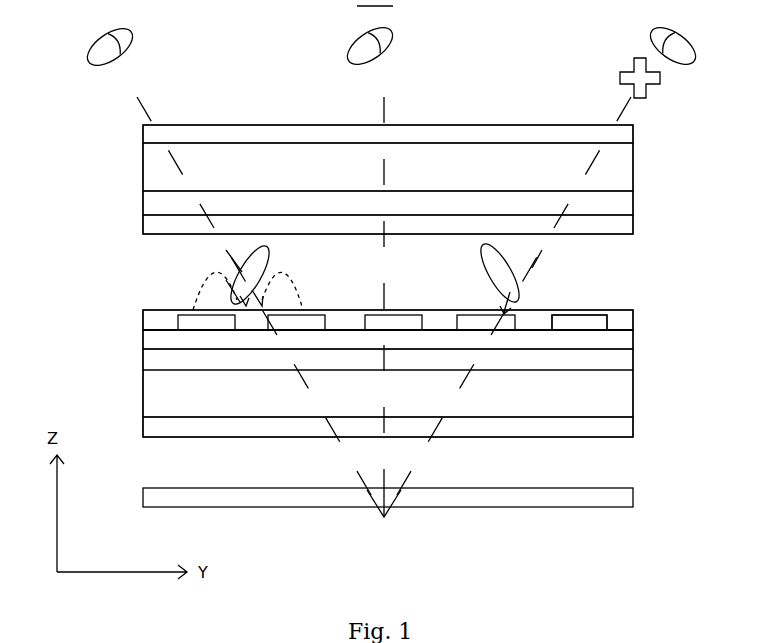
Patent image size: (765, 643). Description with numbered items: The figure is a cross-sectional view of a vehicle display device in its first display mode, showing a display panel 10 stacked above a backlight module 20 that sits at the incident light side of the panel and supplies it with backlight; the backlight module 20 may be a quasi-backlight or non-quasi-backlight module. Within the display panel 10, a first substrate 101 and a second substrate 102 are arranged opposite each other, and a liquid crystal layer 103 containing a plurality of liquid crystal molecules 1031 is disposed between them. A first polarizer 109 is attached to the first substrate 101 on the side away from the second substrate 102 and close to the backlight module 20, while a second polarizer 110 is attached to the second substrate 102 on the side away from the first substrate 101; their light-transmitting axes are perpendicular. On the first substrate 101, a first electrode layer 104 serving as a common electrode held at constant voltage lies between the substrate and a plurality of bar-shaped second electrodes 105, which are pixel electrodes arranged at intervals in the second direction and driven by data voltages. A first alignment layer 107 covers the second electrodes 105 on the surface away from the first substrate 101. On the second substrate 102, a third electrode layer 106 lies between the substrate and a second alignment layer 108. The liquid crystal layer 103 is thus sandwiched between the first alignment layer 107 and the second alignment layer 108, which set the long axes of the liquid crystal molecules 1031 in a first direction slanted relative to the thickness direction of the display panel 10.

The display panel 10 is at (132, 127).
The second polarizer 110 is at (616, 136).
The second substrate 102 is at (614, 156).
The third electrode layer 106 is at (612, 203).
The second alignment layer 108 is at (612, 228).
The liquid crystal layer 103 is at (633, 255).
The liquid crystal molecules 1031 is at (520, 253).
The second electrodes 105 is at (571, 309).
The first alignment layer 107 is at (614, 322).
The backlight module 20 is at (614, 340).
The first electrode layer 104 is at (612, 360).
The first substrate 101 is at (612, 400).
The first polarizer 109 is at (612, 428).